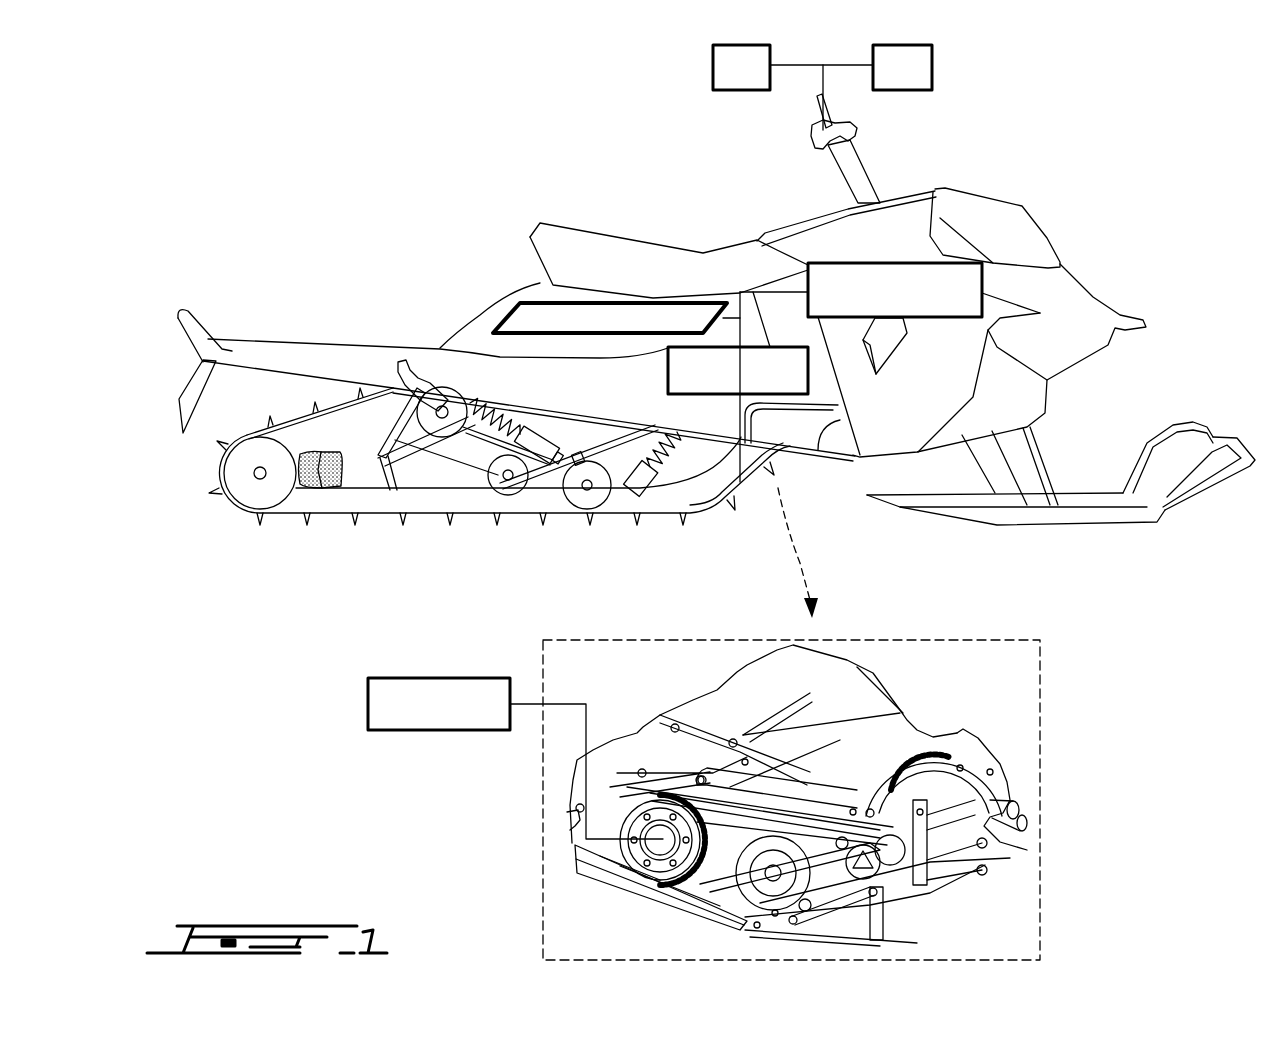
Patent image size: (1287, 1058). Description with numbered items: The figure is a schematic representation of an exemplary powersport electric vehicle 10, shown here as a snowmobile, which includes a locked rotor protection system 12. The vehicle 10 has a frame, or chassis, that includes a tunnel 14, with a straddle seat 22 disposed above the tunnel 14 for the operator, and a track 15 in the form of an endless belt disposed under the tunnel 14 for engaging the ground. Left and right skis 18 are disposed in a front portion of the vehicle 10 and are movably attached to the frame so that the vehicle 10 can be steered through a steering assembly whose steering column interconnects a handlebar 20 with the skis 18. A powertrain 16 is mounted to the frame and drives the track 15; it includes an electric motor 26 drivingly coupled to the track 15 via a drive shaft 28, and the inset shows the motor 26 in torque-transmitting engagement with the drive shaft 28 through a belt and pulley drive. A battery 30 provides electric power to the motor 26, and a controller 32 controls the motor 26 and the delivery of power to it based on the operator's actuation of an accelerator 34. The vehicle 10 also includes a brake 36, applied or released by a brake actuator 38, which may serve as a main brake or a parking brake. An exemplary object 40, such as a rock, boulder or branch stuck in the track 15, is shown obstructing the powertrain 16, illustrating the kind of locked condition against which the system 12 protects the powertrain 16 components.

The powersport electric vehicle 10 is at (1085, 181).
The locked rotor protection system 12 is at (1048, 293).
The tunnel 14 is at (297, 338).
The track 15 is at (415, 513).
The powertrain 16 is at (683, 464).
The skis 18 is at (1212, 428).
The handlebar 20 is at (847, 136).
The straddle seat 22 is at (615, 258).
The electric motor 26 is at (808, 372).
The drive shaft 28 is at (640, 863).
The battery 30 is at (540, 313).
The controller 32 is at (950, 318).
The accelerator 34 is at (932, 65).
The brake 36 is at (368, 704).
The brake actuator 38 is at (713, 65).
The object 40 is at (320, 490).